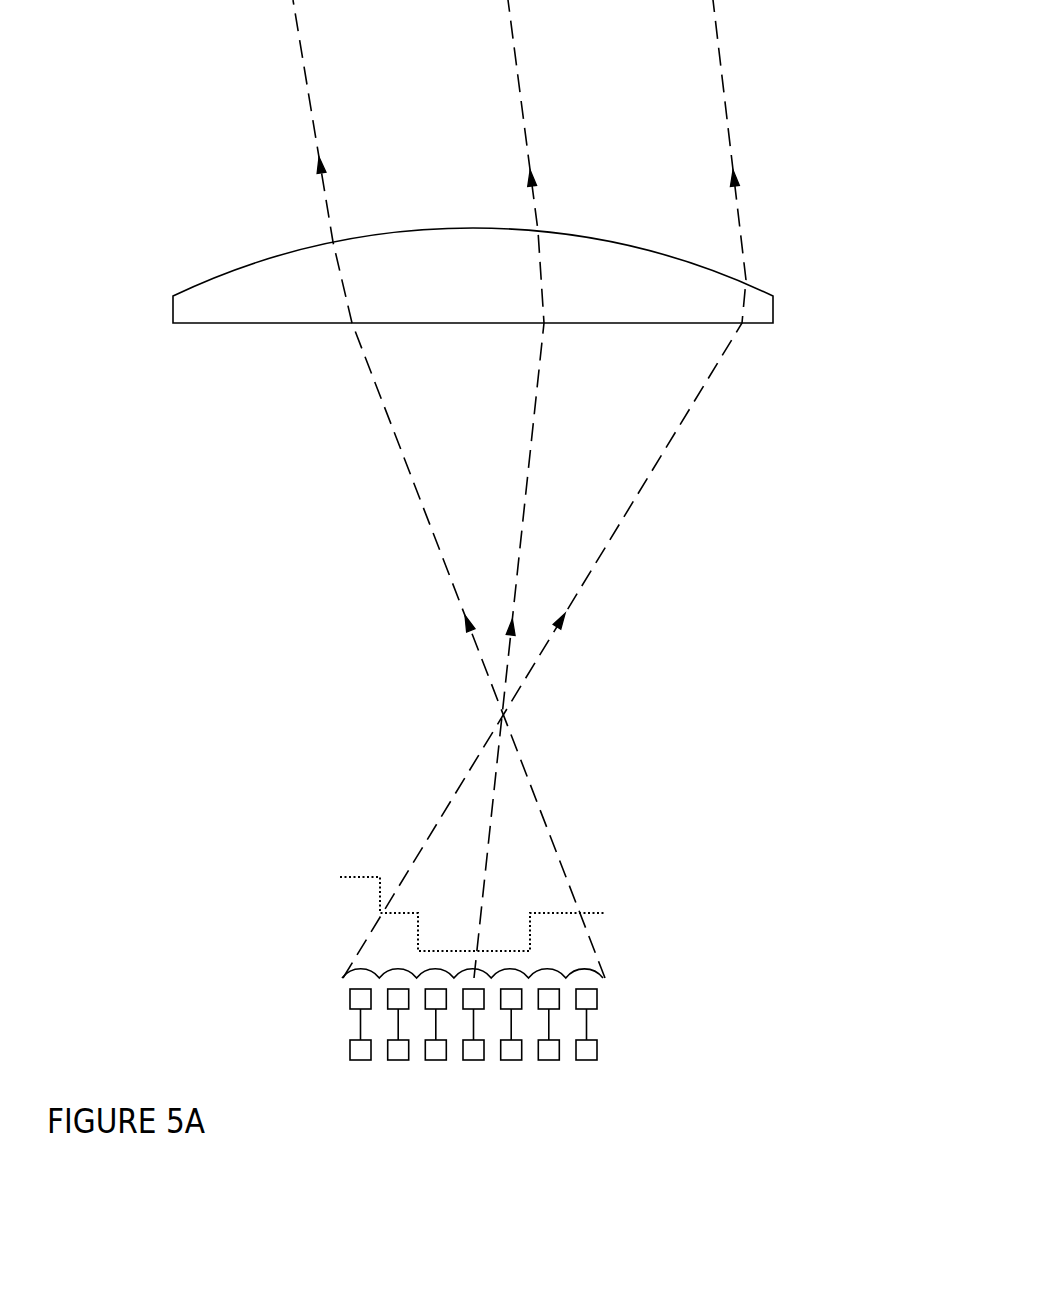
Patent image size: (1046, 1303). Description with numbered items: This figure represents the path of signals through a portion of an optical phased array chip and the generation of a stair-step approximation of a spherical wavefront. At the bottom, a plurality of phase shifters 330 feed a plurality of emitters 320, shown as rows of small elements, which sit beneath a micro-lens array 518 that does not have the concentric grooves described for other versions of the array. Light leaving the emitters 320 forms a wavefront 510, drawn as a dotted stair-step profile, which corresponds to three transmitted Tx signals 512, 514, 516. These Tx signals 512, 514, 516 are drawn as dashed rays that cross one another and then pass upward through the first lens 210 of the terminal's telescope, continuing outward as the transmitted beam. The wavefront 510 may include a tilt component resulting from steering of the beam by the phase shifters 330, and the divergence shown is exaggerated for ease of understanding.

The first lens 210 is at (776, 324).
The Tx signal 512 is at (598, 555).
The Tx signal 514 is at (532, 444).
The Tx signal 516 is at (373, 382).
The wavefront 510 is at (560, 866).
The micro-lens array 518 is at (345, 978).
The emitters 320 is at (603, 1003).
The phase shifters 330 is at (603, 1050).